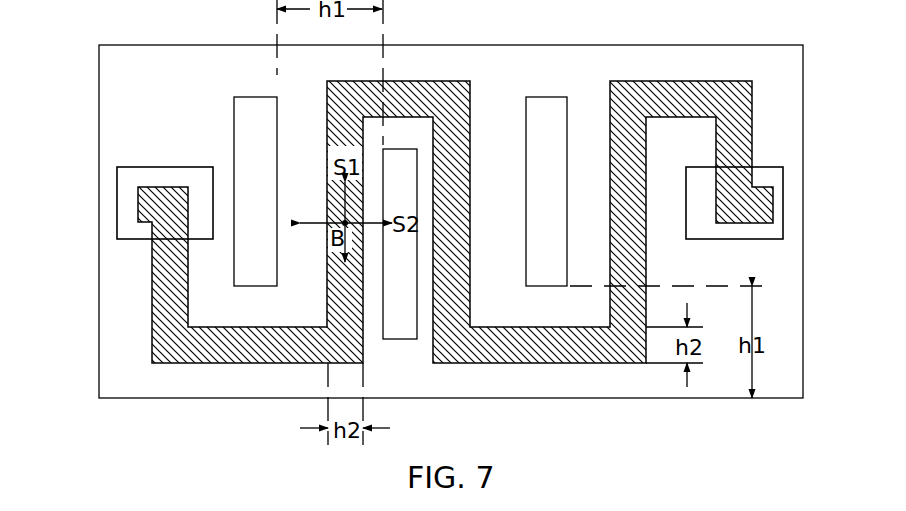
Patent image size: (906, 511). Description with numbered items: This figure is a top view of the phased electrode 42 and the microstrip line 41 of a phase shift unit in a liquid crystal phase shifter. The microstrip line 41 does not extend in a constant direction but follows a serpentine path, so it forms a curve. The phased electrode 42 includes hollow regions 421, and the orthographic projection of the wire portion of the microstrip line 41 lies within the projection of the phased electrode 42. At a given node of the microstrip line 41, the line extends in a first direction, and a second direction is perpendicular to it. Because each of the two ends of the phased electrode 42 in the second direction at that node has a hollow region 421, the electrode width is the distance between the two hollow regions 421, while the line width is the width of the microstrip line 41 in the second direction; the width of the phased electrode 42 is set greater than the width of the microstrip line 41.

The microstrip line 41 is at (145, 197).
The phased electrode 42 is at (137, 334).
The hollow region 421 is at (253, 135).